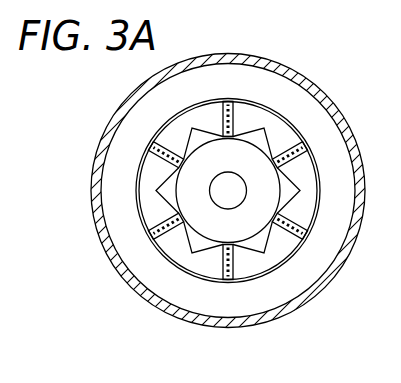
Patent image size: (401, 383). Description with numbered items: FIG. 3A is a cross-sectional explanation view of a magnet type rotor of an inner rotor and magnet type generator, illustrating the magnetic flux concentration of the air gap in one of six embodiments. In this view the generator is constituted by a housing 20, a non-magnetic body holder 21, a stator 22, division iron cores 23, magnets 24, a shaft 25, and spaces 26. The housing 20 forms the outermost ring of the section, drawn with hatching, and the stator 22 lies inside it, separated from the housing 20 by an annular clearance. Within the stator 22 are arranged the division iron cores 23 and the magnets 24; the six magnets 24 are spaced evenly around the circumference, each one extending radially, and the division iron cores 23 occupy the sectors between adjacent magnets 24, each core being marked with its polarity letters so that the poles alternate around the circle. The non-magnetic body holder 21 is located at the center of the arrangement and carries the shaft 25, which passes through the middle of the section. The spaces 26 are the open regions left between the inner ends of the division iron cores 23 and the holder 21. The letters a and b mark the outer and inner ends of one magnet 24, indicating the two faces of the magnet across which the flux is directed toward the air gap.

The housing 20 is at (351, 142).
The non-magnetic body holder 21 is at (190, 198).
The stator 22 is at (342, 182).
The division iron cores 23 is at (302, 217).
The magnets 24 is at (297, 240).
The shaft 25 is at (224, 208).
The spaces 26 is at (193, 242).
The outer magnet face a is at (233, 99).
The inner magnet face b is at (229, 137).